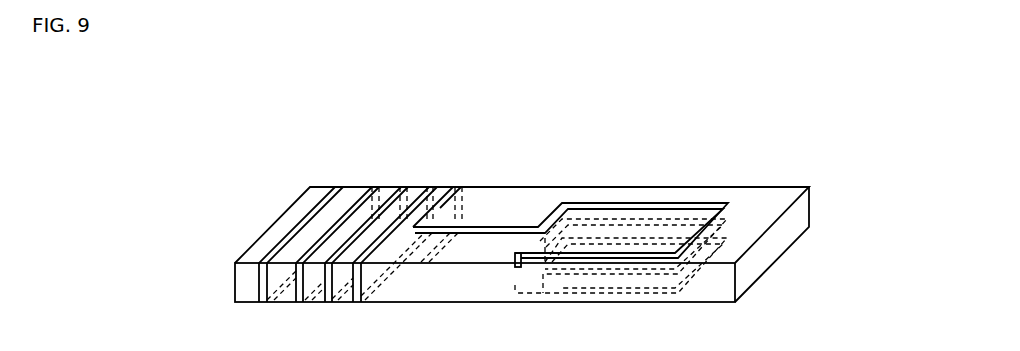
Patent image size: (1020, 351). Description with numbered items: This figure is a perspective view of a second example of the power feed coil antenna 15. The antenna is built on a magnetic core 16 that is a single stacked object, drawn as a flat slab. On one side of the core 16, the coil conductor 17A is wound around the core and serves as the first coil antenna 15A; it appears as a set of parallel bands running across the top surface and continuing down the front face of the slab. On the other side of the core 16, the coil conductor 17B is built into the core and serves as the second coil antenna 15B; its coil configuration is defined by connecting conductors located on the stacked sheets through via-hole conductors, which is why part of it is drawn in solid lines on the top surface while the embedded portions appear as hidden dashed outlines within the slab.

The power feed coil antenna 15 is at (683, 182).
The magnetic core 16 is at (772, 202).
The coil conductor 17A is at (351, 190).
The first coil antenna 15A is at (414, 190).
The coil conductor 17B is at (628, 202).
The second coil antenna 15B is at (638, 294).